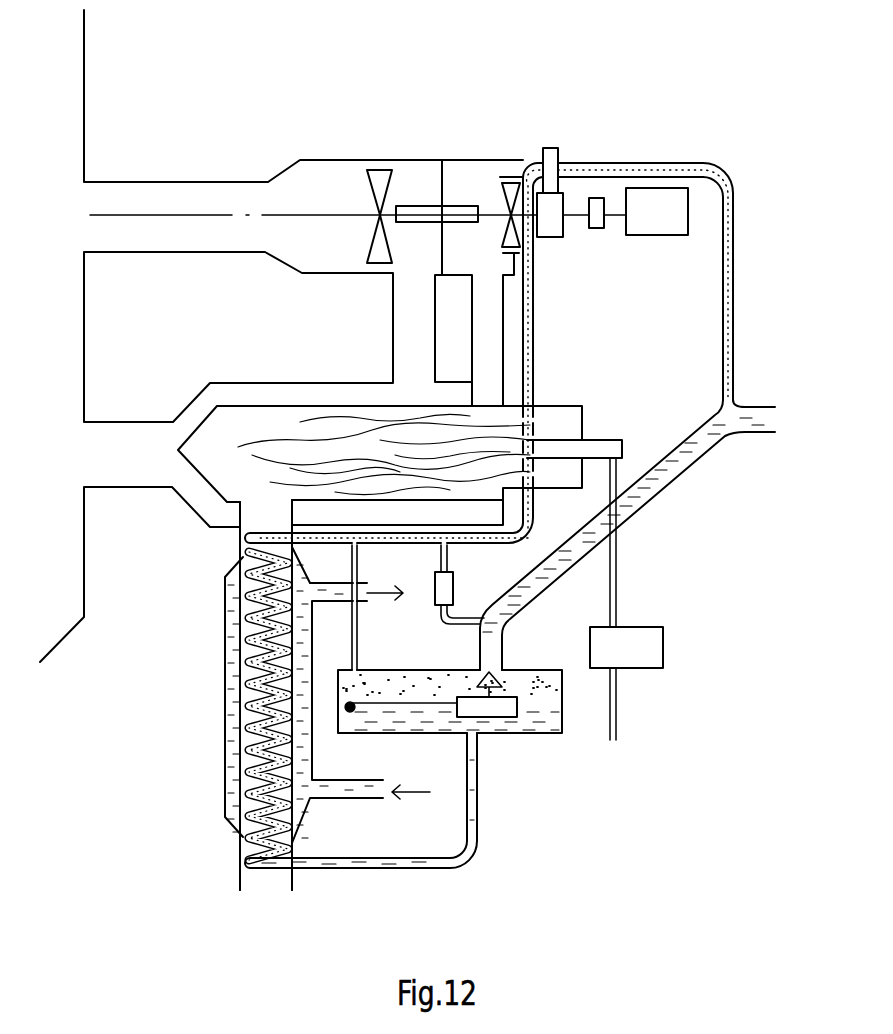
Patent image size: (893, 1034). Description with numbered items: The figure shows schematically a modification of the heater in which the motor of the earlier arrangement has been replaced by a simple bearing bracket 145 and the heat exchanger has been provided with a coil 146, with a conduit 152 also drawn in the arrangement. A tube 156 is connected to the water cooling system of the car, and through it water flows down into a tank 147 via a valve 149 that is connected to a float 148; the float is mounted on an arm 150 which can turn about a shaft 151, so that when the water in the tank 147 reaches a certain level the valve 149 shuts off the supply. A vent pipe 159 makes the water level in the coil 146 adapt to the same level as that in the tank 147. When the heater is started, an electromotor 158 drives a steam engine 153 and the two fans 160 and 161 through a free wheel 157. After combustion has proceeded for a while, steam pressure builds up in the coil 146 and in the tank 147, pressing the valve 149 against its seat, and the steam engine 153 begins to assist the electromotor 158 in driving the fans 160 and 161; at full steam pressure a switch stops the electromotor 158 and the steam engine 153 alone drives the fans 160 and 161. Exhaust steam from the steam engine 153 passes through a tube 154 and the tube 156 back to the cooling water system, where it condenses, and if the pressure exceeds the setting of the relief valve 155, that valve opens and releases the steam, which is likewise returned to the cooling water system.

The bearing bracket 145 is at (432, 208).
The coil 146 is at (243, 751).
The tank 147 is at (562, 706).
The float 148 is at (502, 708).
The valve 149 is at (505, 683).
The arm 150 is at (415, 705).
The shaft 151 is at (352, 712).
The conduit 152 is at (532, 313).
The steam engine 153 is at (552, 148).
The tube 154 is at (663, 167).
The relief valve 155 is at (453, 582).
The tube 156 is at (670, 477).
The free wheel 157 is at (596, 198).
The electromotor 158 is at (678, 192).
The vent pipe 159 is at (358, 637).
The fan 160 is at (380, 162).
The fan 161 is at (508, 176).